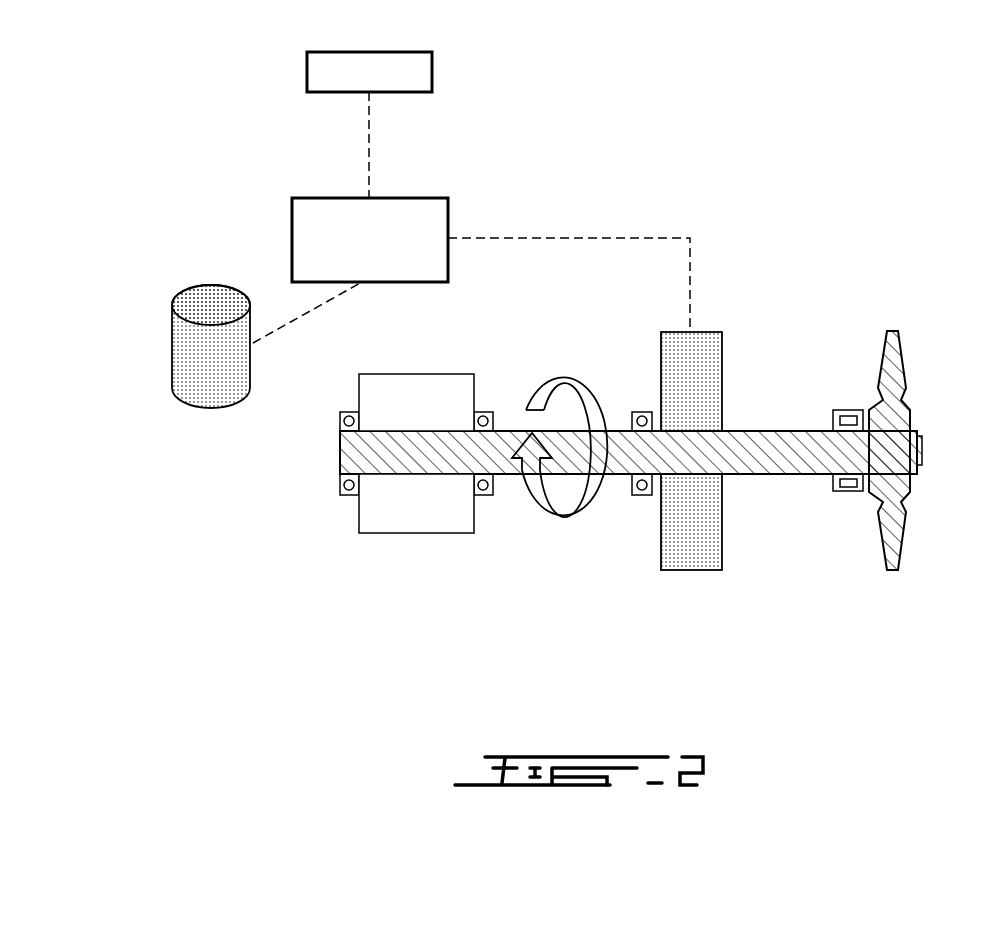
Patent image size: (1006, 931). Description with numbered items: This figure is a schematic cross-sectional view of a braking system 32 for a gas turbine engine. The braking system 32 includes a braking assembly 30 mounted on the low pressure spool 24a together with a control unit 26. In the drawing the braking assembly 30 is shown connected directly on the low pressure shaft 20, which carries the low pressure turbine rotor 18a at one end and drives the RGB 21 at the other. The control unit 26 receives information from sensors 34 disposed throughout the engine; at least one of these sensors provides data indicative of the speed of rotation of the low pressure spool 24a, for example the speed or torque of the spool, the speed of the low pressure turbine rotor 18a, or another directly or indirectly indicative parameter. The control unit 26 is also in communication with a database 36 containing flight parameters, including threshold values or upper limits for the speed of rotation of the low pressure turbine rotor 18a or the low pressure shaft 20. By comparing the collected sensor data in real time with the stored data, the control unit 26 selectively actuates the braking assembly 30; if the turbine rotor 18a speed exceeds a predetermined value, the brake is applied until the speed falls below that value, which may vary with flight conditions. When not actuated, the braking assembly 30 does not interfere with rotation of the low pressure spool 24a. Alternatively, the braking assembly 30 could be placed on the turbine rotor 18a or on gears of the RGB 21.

The sensors 34 is at (307, 75).
The control unit 26 is at (292, 242).
The database 36 is at (172, 350).
The braking system 32 is at (663, 165).
The low pressure spool 24a is at (843, 252).
The low pressure shaft 20 is at (769, 452).
The RGB 21 is at (418, 510).
The braking assembly 30 is at (684, 544).
The low pressure turbine rotor 18a is at (895, 535).